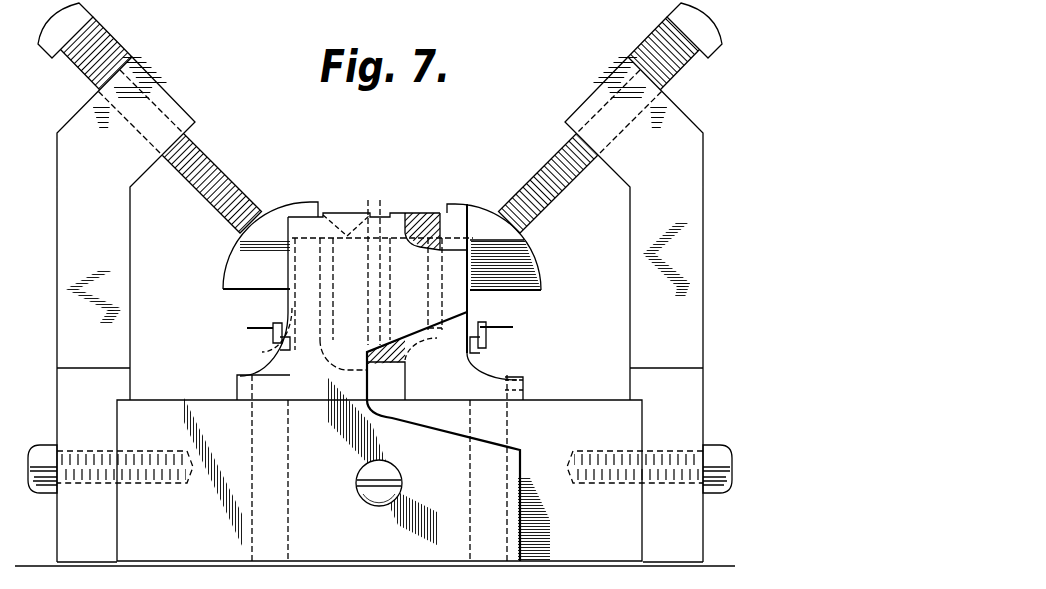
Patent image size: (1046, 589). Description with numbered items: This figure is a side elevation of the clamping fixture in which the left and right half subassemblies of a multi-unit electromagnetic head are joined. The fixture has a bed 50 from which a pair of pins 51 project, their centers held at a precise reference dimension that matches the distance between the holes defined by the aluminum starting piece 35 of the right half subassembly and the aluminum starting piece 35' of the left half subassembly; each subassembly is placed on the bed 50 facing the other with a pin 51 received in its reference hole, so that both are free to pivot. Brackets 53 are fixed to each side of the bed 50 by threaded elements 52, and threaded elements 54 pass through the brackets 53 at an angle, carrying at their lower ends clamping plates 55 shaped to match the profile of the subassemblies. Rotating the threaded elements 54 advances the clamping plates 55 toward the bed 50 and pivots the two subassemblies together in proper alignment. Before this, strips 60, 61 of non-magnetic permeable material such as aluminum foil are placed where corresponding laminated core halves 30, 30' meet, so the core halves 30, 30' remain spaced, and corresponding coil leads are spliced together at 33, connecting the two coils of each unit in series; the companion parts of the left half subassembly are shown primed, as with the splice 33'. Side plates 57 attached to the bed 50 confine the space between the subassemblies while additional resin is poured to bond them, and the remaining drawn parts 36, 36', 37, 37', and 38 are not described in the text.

The laminated core half 30 is at (434, 219).
The laminated core half 30' is at (347, 211).
The splice 33 is at (409, 316).
The guide rod (hidden) 33' is at (344, 304).
The aluminum starting piece 35 is at (433, 359).
The aluminum starting piece 35' is at (272, 320).
The pin 36 is at (496, 325).
The pin (hidden) 36' is at (255, 324).
The retaining clip 37 is at (492, 341).
The retaining clip (hidden) 37' is at (270, 349).
The foot block 38 is at (525, 382).
The bed 50 is at (557, 410).
The pin 51 is at (250, 376).
The threaded element 52 is at (43, 448).
The bracket 53 is at (67, 270).
The threaded element 54 is at (103, 43).
The clamping plate 55 is at (280, 205).
The side plate 57 is at (308, 230).
The non-magnetic permeable strip 60 is at (377, 213).
The non-magnetic permeable strip 61 is at (368, 348).